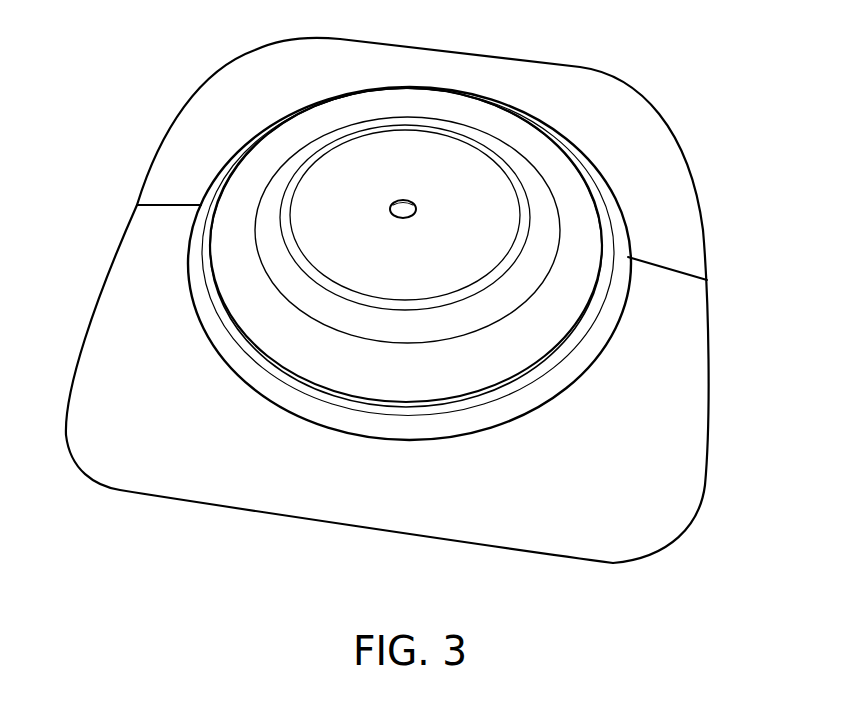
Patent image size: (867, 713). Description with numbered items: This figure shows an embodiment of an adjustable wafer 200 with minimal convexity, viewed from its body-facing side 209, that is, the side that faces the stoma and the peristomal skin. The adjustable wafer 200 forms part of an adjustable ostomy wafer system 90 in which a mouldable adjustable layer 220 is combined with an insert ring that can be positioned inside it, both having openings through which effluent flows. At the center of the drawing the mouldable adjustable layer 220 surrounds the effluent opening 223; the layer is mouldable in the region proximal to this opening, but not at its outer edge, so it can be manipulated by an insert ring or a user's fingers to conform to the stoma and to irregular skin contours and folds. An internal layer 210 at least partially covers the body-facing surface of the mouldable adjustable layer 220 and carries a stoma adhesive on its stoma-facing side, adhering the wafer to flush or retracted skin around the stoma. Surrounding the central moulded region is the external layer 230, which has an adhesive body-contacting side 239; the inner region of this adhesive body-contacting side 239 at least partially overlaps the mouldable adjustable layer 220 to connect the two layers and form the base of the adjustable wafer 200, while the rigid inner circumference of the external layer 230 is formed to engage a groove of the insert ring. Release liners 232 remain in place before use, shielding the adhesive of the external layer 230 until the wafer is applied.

The adjustable ostomy wafer system 90 is at (181, 48).
The adjustable wafer 200 is at (112, 131).
The body-facing side 209 is at (601, 49).
The internal layer 210 is at (322, 250).
The mouldable adjustable layer 220 is at (578, 273).
The effluent opening 223 is at (400, 204).
The external layer 230 is at (522, 430).
The release liner 232 is at (678, 230).
The adhesive body-contacting side 239 is at (690, 395).